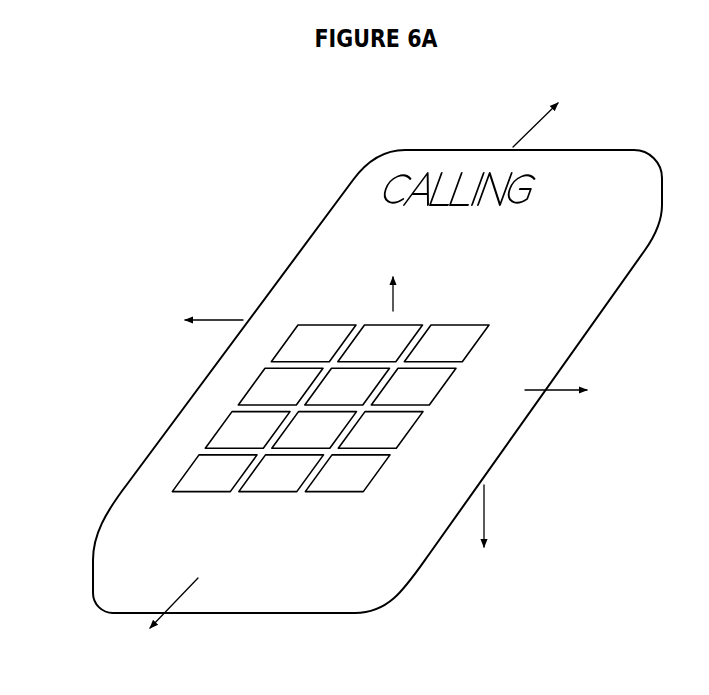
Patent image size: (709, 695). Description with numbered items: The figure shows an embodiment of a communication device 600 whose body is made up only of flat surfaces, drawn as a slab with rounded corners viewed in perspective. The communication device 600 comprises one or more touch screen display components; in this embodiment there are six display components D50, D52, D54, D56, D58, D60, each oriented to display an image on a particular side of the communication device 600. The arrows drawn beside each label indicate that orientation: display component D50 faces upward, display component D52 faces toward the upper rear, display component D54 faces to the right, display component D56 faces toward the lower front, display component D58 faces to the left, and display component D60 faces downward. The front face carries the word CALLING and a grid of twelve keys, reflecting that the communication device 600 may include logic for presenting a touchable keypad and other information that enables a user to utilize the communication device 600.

The communication device 600 is at (376, 156).
The display component D50 is at (415, 295).
The display component D52 is at (549, 125).
The display component D54 is at (541, 377).
The display component D56 is at (201, 598).
The display component D58 is at (218, 310).
The display component D60 is at (507, 516).